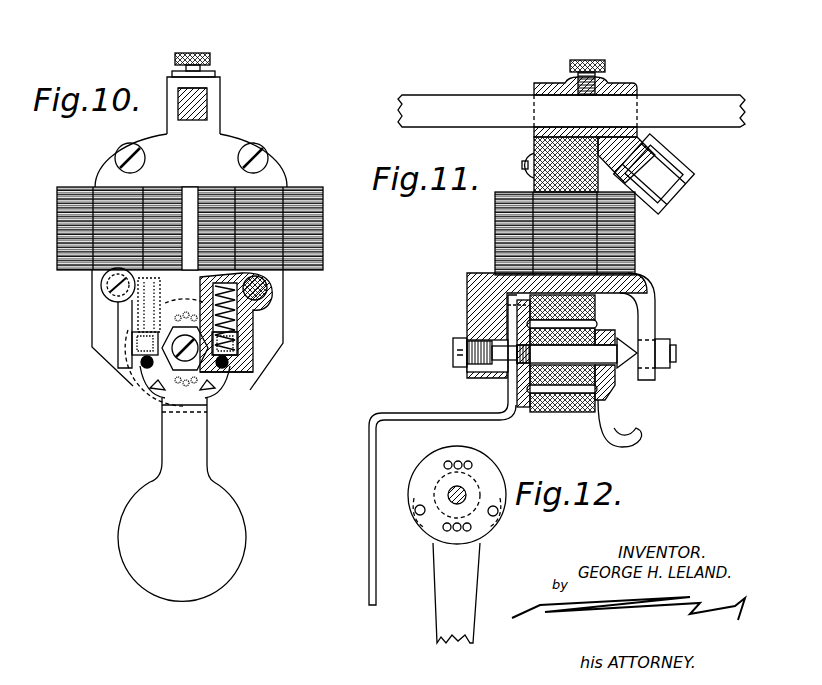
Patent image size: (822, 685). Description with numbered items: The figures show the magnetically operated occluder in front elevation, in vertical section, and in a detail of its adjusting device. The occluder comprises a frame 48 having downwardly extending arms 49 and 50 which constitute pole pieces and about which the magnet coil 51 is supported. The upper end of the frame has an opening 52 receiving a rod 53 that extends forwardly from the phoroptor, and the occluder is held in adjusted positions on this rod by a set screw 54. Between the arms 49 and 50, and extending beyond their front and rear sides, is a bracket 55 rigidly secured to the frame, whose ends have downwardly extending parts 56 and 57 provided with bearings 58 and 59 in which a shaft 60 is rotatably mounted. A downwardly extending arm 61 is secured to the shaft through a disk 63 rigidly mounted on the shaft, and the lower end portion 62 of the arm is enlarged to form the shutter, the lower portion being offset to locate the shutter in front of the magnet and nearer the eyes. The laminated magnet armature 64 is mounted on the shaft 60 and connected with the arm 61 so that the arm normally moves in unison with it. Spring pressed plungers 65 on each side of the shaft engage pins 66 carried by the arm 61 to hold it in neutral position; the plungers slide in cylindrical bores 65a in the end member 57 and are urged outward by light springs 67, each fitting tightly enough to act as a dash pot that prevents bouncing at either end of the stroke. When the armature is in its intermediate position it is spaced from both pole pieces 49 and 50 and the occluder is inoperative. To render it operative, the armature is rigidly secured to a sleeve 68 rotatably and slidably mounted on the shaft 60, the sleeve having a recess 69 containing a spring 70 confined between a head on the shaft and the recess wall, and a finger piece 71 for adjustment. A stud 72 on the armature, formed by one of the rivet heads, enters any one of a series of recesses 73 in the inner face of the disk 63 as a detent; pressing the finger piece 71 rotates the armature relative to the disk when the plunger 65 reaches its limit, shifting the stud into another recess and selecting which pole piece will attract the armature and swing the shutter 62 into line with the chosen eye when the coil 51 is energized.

In FIG. 10, the frame 48 is at (191, 129).
In FIG. 11, the frame 48 is at (533, 145).
In FIG. 10, the downwardly extending arm 49 is at (283, 311).
In FIG. 10, the downwardly extending arm 50 is at (100, 334).
In FIG. 10, the magnet coil 51 is at (323, 233).
In FIG. 11, the magnet coil 51 is at (636, 247).
In FIG. 10, the opening 52 is at (210, 107).
In FIG. 11, the opening 52 is at (585, 107).
In FIG. 10, the rod 53 is at (207, 95).
In FIG. 11, the rod 53 is at (571, 111).
In FIG. 10, the set screw 54 is at (208, 57).
In FIG. 11, the set screw 54 is at (600, 58).
In FIG. 11, the bracket 55 is at (646, 294).
In FIG. 11, the downwardly extending part 56 is at (654, 318).
In FIG. 10, the downwardly extending part 57 is at (254, 313).
In FIG. 11, the bearing 58 is at (676, 358).
In FIG. 10, the bearing 59 is at (172, 361).
In FIG. 11, the bearing 59 is at (452, 358).
In FIG. 11, the shaft 60 is at (567, 353).
In FIG. 12, the shaft 60 is at (450, 493).
In FIG. 10, the downwardly extending arm 61 is at (182, 440).
In FIG. 11, the downwardly extending arm 61 is at (424, 418).
In FIG. 12, the downwardly extending arm 61 is at (456, 593).
In FIG. 10, the shutter or disk 62 is at (182, 541).
In FIG. 11, the shutter or disk 62 is at (371, 522).
In FIG. 11, the disk 63 is at (518, 408).
In FIG. 12, the disk 63 is at (434, 464).
In FIG. 10, the magnet armature 64 is at (216, 393).
In FIG. 11, the magnet armature 64 is at (583, 411).
In FIG. 10, the spring pressed plunger 65 is at (133, 346).
In FIG. 10, the cylindrical bore 65a is at (234, 333).
In FIG. 10, the pin 66 is at (145, 367).
In FIG. 12, the pin 66 is at (418, 516).
In FIG. 10, the light spring 67 is at (258, 321).
In FIG. 11, the sleeve 68 is at (523, 376).
In FIG. 11, the recess 69 is at (604, 337).
In FIG. 11, the spring 70 is at (612, 386).
In FIG. 11, the finger piece 71 is at (627, 431).
In FIG. 10, the stud 72 is at (183, 403).
In FIG. 11, the stud 72 is at (510, 318).
In FIG. 10, the recesses 73 is at (185, 378).
In FIG. 11, the recesses 73 is at (558, 323).
In FIG. 12, the recesses 73 is at (459, 460).